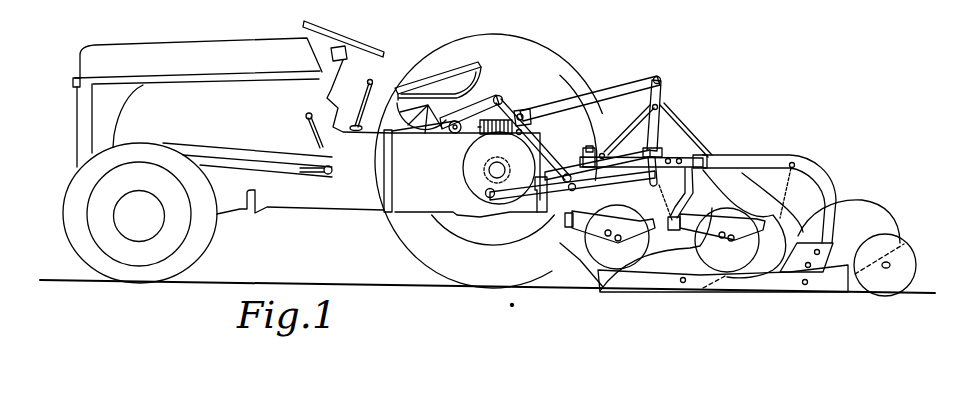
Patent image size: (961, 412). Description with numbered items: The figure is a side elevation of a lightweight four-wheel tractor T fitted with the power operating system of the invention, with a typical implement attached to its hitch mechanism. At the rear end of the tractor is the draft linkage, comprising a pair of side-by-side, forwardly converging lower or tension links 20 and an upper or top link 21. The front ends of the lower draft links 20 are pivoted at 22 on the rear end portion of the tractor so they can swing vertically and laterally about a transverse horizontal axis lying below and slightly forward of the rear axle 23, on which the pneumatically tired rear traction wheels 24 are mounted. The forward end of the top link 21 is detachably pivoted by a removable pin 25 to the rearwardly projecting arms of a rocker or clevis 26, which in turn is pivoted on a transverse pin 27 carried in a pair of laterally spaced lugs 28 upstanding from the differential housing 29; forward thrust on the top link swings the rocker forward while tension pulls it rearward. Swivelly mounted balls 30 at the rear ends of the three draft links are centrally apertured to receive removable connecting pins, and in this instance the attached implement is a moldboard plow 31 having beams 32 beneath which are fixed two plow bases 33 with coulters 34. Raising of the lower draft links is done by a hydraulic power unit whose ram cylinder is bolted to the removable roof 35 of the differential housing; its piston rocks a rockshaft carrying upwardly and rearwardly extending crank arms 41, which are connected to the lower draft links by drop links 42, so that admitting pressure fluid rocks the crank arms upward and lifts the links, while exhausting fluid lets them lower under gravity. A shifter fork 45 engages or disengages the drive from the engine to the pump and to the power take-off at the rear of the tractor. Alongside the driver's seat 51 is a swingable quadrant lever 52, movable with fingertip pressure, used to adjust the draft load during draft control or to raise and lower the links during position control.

The tractor T is at (119, 31).
The lower draft links 20 is at (554, 190).
The top link 21 is at (612, 95).
The pivots 22 is at (488, 195).
The rear axle 23 is at (487, 165).
The rear traction wheels 24 is at (403, 250).
The removable pin 25 is at (533, 117).
The rocker 26 is at (520, 113).
The transverse pin 27 is at (518, 135).
The lugs 28 is at (524, 122).
The differential housing 29 is at (465, 180).
The swivelly mounted balls 30 is at (660, 79).
The moldboard plow 31 is at (794, 143).
The beams 32 is at (826, 176).
The plow bases 33 is at (770, 290).
The coulters 34 is at (733, 220).
The removable roof 35 is at (390, 127).
The crank arms 41 is at (484, 100).
The drop links 42 is at (562, 160).
The shifter fork 45 is at (537, 207).
The driver's seat 51 is at (452, 78).
The quadrant lever 52 is at (423, 100).